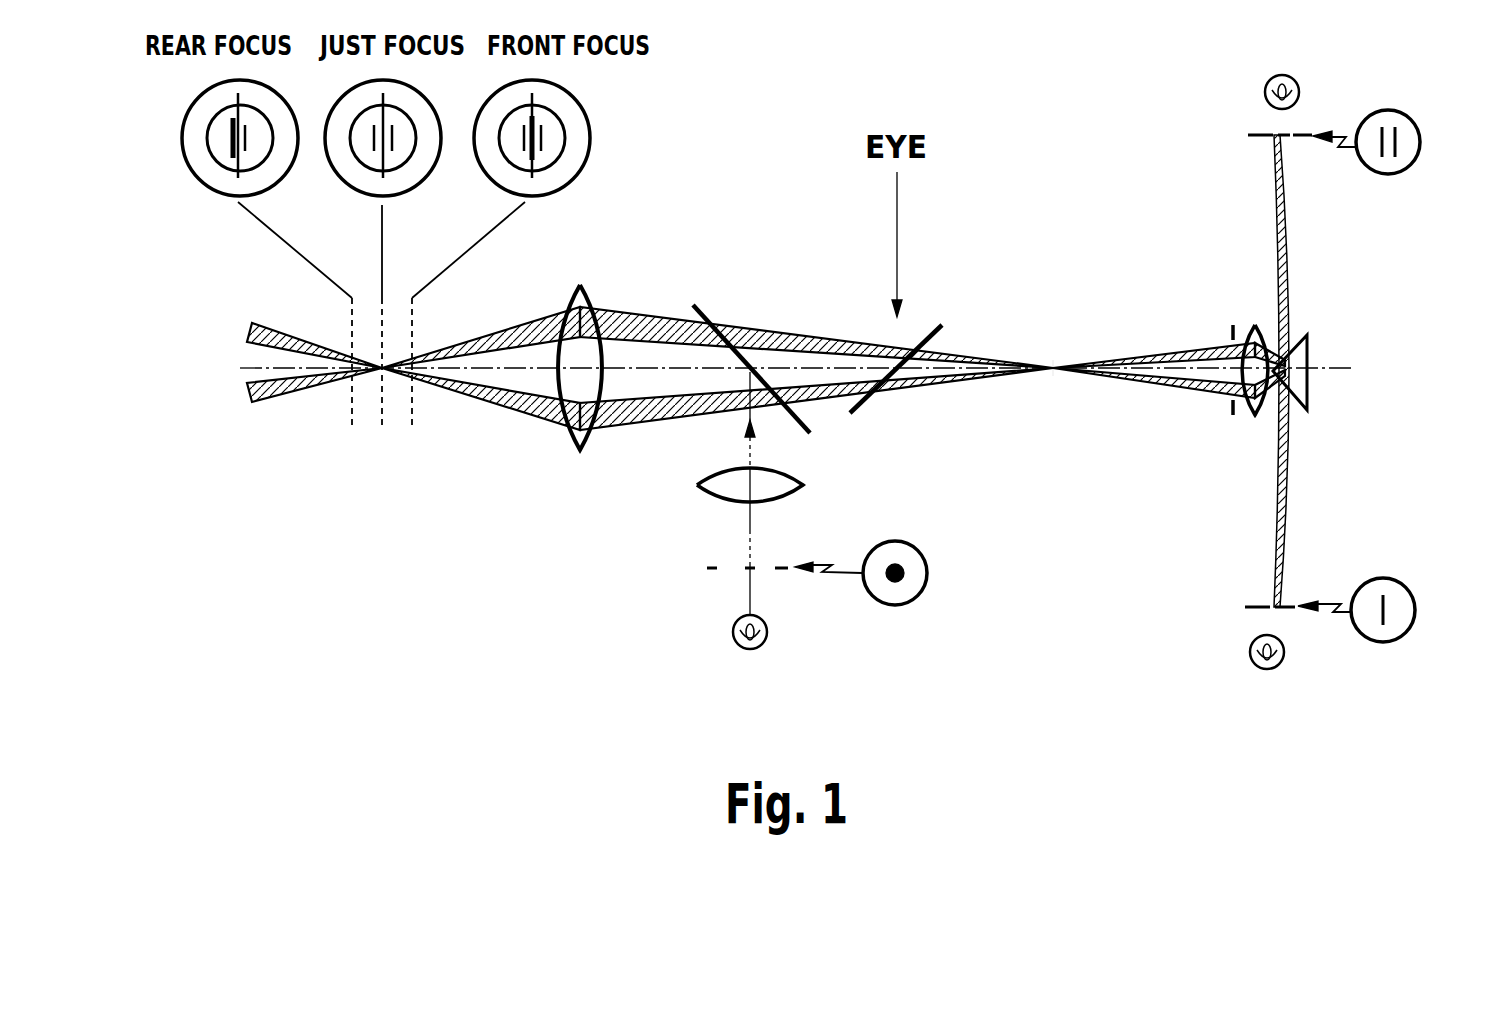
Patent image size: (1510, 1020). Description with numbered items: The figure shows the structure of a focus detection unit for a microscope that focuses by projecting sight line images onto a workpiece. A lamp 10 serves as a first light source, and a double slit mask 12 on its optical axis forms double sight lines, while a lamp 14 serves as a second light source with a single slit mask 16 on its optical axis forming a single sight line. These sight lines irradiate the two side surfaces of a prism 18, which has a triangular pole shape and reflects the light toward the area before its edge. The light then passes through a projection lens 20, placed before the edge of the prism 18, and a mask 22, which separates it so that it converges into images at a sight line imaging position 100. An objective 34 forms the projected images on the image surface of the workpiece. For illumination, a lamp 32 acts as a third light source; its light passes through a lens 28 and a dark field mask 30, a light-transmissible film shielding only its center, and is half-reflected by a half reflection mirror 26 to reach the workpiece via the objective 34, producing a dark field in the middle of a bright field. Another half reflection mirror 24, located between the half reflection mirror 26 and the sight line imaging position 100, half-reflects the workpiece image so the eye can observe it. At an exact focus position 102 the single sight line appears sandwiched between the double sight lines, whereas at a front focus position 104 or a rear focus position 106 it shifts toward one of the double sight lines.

The lamp 10 is at (1298, 90).
The double slit mask 12 is at (1302, 140).
The lamp 14 is at (1275, 668).
The single slit mask 16 is at (1288, 607).
The prism 18 is at (1308, 355).
The projection lens 20 is at (1256, 327).
The mask 22 is at (1232, 410).
The half reflection mirror 24 is at (938, 330).
The half reflection mirror 26 is at (693, 305).
The lens 28 is at (803, 483).
The dark field mask 30 is at (885, 607).
The lamp 32 is at (735, 645).
The objective 34 is at (567, 438).
The sight line imaging position 100 is at (1053, 345).
The exact focus position 102 is at (382, 430).
The front focus position 104 is at (412, 430).
The rear focus position 106 is at (352, 430).